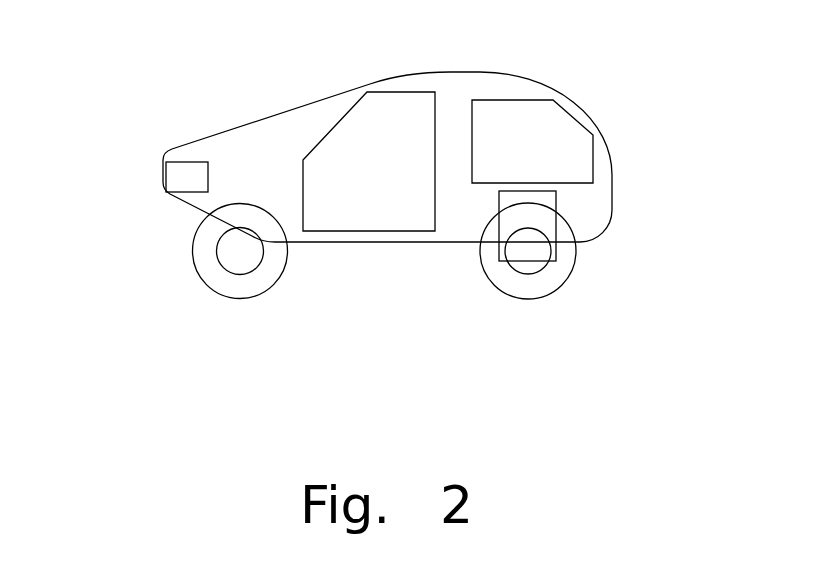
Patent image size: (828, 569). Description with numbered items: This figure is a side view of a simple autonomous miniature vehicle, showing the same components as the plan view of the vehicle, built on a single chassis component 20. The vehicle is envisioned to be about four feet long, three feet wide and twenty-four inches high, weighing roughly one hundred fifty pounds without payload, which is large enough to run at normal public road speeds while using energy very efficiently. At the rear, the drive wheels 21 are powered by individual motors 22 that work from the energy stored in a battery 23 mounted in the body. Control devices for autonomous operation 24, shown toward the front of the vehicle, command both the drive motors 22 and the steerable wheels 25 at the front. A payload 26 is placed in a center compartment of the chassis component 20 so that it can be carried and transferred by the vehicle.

The chassis component 20 is at (273, 115).
The drive wheels 21 is at (573, 261).
The motors 22 is at (555, 205).
The battery 23 is at (573, 117).
The control devices for autonomous operation 24 is at (185, 192).
The steerable wheels 25 is at (273, 283).
The payload 26 is at (435, 128).